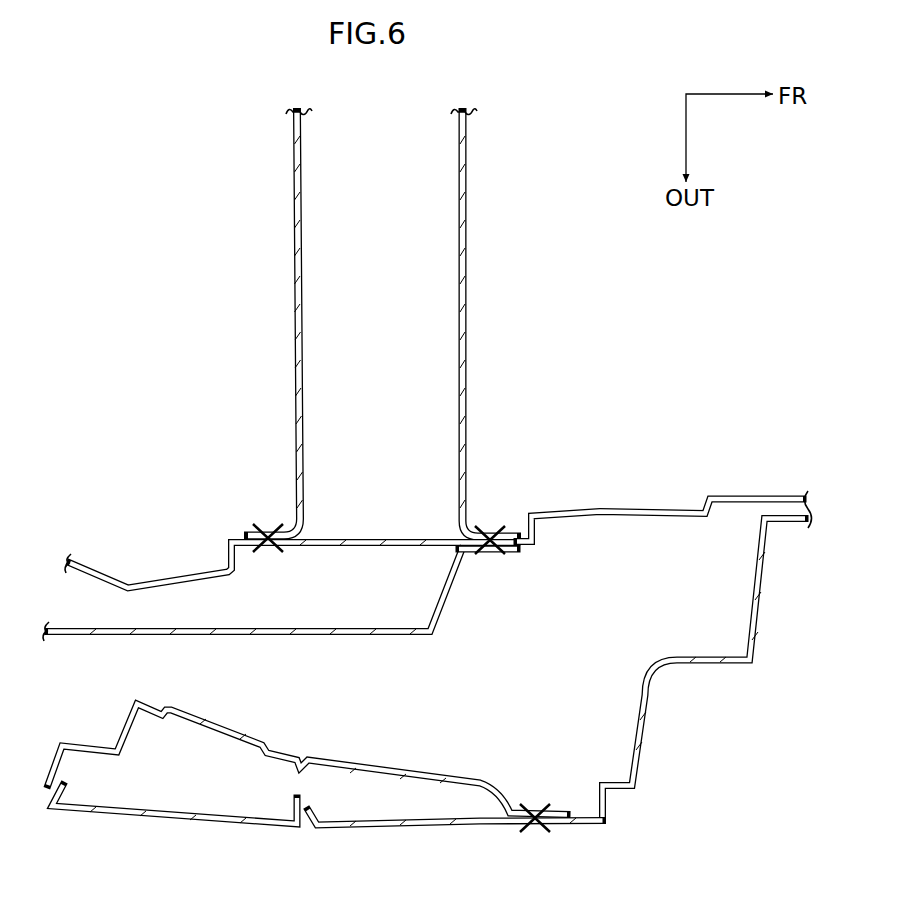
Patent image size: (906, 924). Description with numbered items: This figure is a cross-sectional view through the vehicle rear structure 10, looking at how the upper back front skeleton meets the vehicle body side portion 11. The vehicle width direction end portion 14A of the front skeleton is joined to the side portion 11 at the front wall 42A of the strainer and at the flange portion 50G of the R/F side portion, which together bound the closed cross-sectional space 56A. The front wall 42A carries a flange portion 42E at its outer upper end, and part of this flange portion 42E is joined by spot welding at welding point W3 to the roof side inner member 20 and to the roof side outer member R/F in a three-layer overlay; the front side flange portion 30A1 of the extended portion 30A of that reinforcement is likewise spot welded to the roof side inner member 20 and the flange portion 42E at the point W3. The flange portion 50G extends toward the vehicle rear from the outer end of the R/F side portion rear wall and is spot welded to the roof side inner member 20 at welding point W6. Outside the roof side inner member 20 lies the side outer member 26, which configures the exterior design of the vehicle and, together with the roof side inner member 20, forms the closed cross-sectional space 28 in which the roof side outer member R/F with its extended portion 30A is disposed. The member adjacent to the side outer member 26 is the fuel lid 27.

The vehicle rear structure 10 is at (552, 212).
The vehicle body side portion 11 is at (675, 718).
The vehicle width direction end portion 14A is at (206, 322).
The roof side inner member 20 is at (613, 515).
The side outer member 26 is at (428, 830).
The fuel lid 27 is at (175, 828).
The closed cross-sectional space 28 is at (503, 695).
The extended portion 30A is at (304, 631).
The front side flange portion 30A1 is at (493, 553).
The front wall 42A is at (533, 323).
The flange portion 42E is at (515, 530).
The flange portion 50G is at (297, 362).
The closed cross-sectional space 56A is at (418, 315).
The welding point W3 is at (483, 527).
The welding point W6 is at (277, 528).